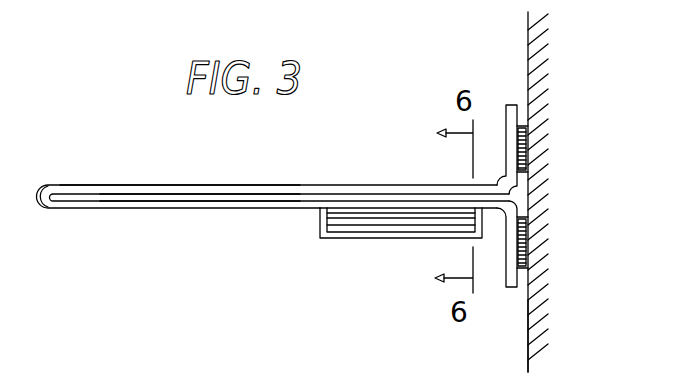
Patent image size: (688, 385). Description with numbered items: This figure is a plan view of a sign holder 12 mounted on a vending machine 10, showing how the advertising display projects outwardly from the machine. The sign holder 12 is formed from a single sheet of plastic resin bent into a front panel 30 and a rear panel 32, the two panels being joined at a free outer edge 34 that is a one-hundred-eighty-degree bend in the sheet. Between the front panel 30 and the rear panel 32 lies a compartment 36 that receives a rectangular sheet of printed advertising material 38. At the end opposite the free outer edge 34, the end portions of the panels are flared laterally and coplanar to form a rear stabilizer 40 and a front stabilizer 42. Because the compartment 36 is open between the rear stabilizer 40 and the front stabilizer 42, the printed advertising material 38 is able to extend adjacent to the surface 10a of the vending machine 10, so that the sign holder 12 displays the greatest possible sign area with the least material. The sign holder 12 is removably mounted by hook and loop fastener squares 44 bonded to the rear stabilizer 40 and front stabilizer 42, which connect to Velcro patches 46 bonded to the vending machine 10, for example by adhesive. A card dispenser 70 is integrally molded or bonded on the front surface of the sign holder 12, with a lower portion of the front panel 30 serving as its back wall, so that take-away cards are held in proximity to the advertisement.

The vending machine 10 is at (516, 44).
The surface of the vending machine 10a is at (528, 320).
The sign holder 12 is at (136, 162).
The front panel 30 is at (108, 209).
The rear panel 32 is at (103, 185).
The free outer edge 34 is at (42, 197).
The compartment 36 is at (183, 205).
The printed advertising material 38 is at (232, 210).
The rear stabilizer 40 is at (505, 128).
The front stabilizer 42 is at (507, 253).
The hook and loop fastener squares 44 is at (524, 230).
The Velcro patches 46 is at (532, 137).
The card dispenser 70 is at (316, 250).